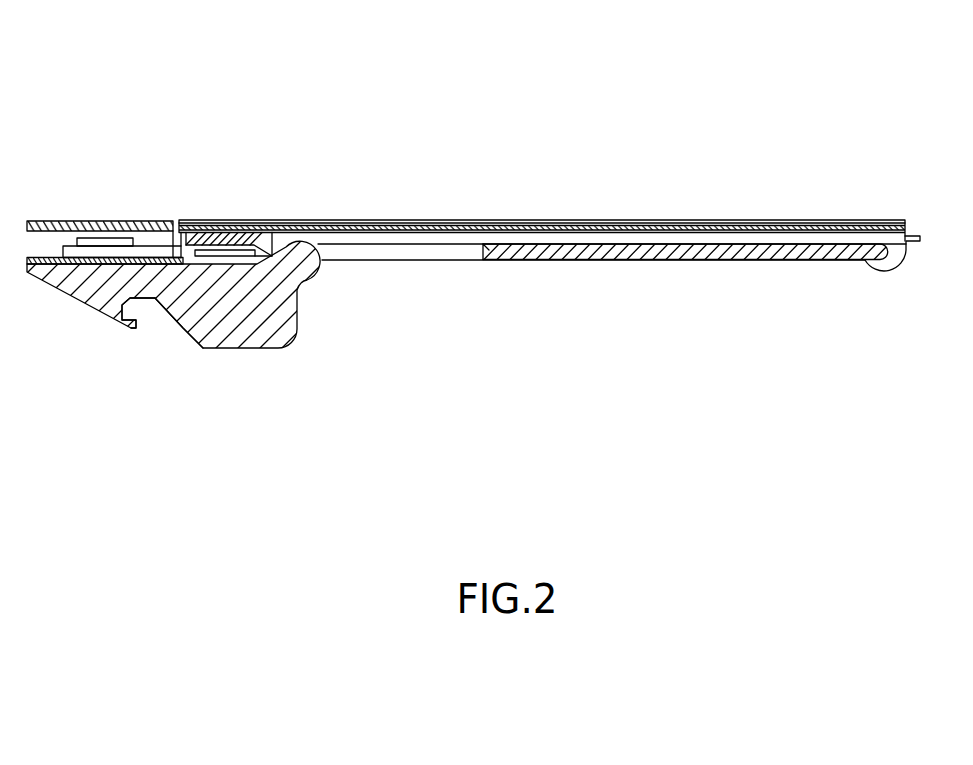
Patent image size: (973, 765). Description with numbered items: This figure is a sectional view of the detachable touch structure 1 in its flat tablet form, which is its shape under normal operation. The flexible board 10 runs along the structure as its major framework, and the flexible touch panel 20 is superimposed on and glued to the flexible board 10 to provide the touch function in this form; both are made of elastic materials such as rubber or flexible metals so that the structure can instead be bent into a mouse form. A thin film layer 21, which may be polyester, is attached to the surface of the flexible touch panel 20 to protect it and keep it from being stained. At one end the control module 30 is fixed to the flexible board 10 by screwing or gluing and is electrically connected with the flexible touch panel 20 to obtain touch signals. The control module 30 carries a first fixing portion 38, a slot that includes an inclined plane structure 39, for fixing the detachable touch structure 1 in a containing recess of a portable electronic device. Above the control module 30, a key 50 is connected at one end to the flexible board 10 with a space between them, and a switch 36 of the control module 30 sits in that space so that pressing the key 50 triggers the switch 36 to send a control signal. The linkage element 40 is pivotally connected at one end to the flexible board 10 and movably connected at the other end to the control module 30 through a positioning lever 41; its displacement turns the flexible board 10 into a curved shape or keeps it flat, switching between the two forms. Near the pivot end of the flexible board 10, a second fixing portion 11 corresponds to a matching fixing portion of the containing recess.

The detachable touch structure 1 is at (297, 79).
The flexible board 10 is at (719, 246).
The second fixing portion 11 is at (912, 241).
The flexible touch panel 20 is at (907, 226).
The thin film layer 21 is at (594, 221).
The control module 30 is at (258, 350).
The switch 36 is at (106, 242).
The first fixing portion 38 is at (148, 308).
The inclined plane structure 39 is at (183, 346).
The linkage element 40 is at (662, 259).
The positioning lever 41 is at (392, 261).
The key 50 is at (52, 226).